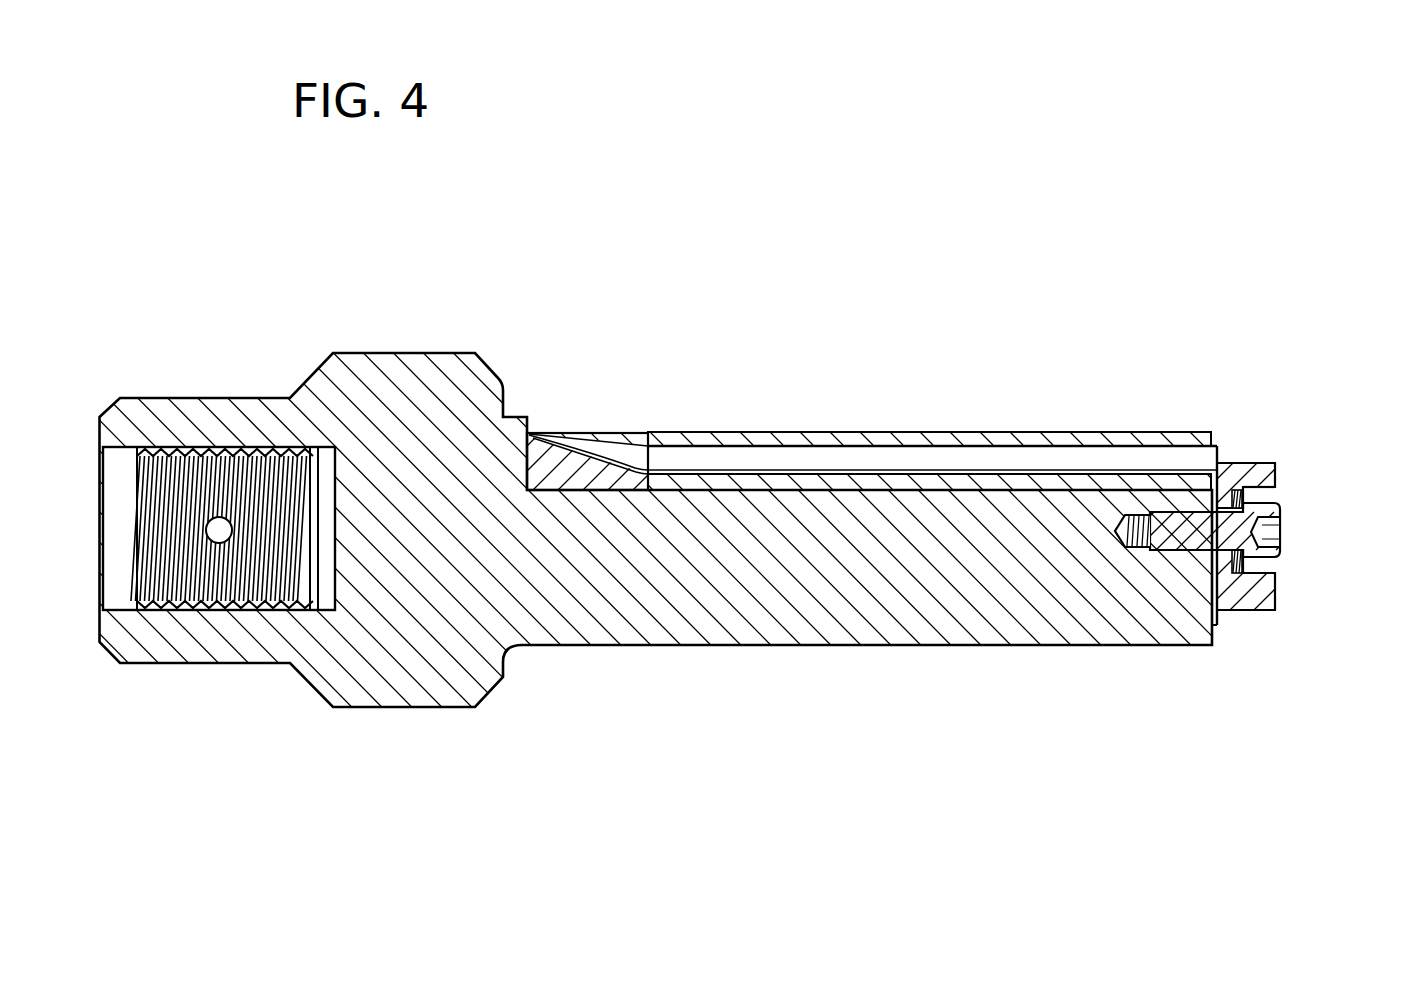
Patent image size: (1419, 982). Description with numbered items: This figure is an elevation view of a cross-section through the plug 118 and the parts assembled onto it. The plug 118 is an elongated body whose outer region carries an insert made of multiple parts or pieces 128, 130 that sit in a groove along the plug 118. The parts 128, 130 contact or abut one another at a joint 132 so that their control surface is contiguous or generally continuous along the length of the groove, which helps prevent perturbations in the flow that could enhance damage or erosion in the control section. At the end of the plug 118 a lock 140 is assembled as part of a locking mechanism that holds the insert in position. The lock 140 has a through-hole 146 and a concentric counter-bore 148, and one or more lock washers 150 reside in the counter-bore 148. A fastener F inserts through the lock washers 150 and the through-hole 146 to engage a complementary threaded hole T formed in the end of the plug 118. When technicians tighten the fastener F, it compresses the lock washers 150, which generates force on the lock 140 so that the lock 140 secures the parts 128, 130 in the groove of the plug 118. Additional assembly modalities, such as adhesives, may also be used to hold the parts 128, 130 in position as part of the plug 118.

The plug 118 is at (995, 638).
The part of insert 128 is at (573, 465).
The part of insert 130 is at (1220, 452).
The joint 132 is at (652, 438).
The lock 140 is at (1245, 611).
The through-hole 146 is at (1228, 500).
The counter-bore 148 is at (1284, 487).
The lock washers 150 is at (1243, 492).
The threaded hole T is at (1135, 513).
The fastener F is at (1283, 532).